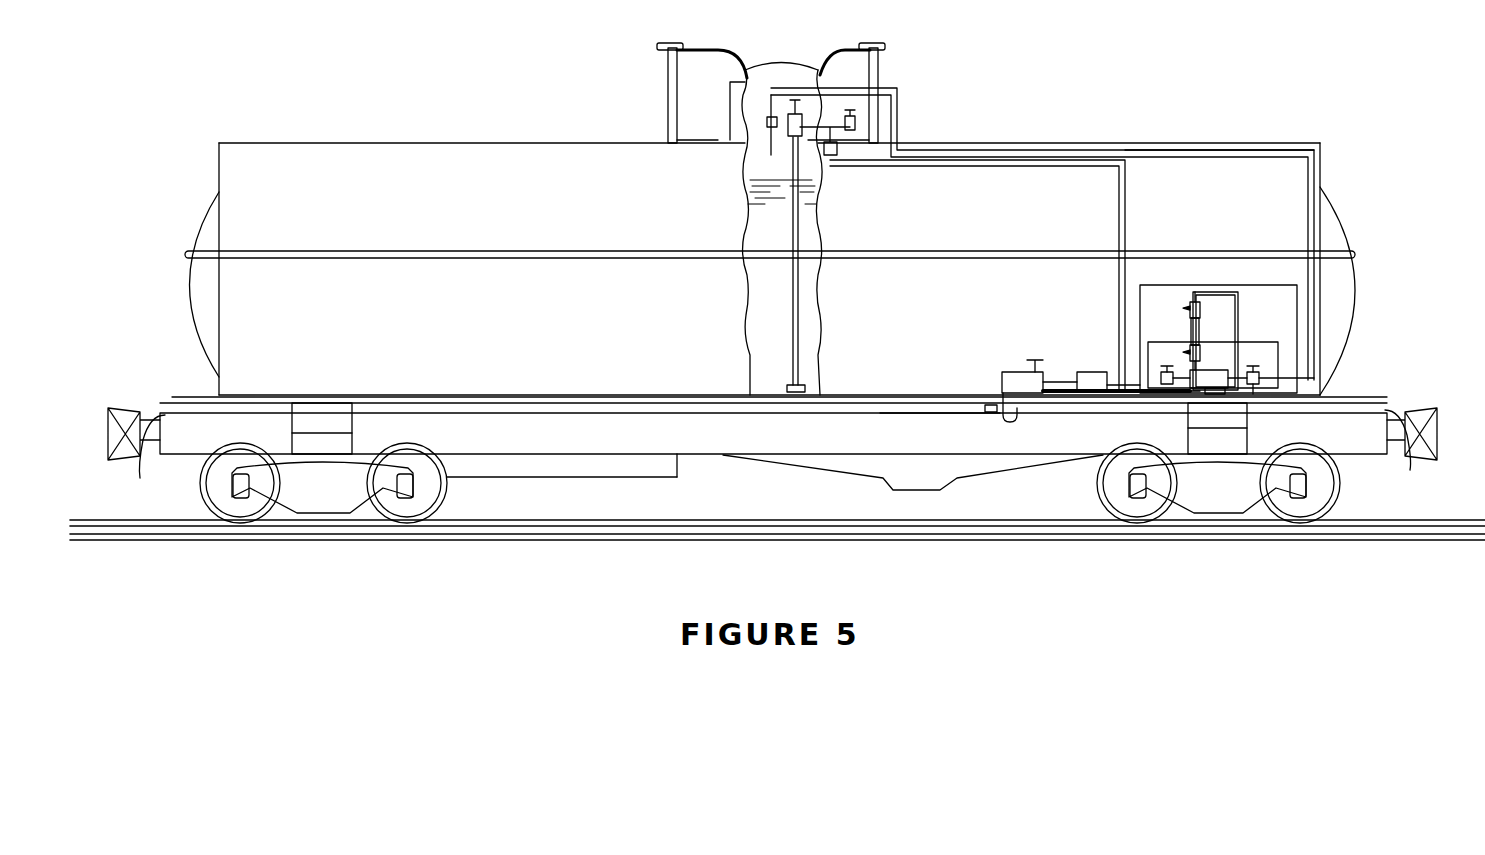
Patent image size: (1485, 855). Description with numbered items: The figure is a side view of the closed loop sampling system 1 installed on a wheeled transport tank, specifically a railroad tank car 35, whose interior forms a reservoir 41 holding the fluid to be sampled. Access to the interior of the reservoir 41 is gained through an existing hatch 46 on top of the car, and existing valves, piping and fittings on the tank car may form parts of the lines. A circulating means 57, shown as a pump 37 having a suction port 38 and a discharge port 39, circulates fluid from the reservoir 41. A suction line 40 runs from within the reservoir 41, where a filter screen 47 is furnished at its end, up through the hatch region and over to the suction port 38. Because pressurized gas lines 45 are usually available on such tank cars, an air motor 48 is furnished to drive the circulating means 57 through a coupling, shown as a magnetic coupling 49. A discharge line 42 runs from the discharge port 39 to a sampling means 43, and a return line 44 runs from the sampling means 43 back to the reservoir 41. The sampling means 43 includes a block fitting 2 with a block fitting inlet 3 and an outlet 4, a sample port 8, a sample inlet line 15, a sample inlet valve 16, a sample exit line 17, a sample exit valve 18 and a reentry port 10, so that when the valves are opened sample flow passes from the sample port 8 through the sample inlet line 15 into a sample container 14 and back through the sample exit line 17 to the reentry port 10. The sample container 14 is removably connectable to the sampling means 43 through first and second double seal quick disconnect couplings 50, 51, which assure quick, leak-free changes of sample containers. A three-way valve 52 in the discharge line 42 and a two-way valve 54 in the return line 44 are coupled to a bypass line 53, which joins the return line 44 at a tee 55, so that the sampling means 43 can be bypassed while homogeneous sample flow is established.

The system 1 is at (1265, 222).
The block fitting 2 is at (1215, 394).
The block fitting inlet 3 is at (1188, 392).
The outlet 4 is at (1252, 371).
The sample port 8 is at (1165, 371).
The reentry port 10 is at (1195, 415).
The sample container 14 is at (1190, 332).
The sample inlet line 15 is at (1198, 372).
The sample inlet valve 16 is at (1200, 345).
The sample exit line 17 is at (1240, 303).
The sample exit valve 18 is at (1201, 306).
The railroad tank car 35 is at (1127, 142).
The pump 37 is at (1096, 372).
The suction port 38 is at (1115, 385).
The discharge port 39 is at (1090, 394).
The suction line 40 is at (800, 236).
The reservoir 41 is at (782, 223).
The discharge line 42 is at (1105, 456).
The sampling means 43 is at (1284, 306).
The return line 44 is at (762, 147).
The pressurized gas line 45 is at (930, 412).
The hatch 46 is at (748, 72).
The filter screen 47 is at (793, 384).
The air motor 48 is at (1012, 372).
The magnetic coupling 49 is at (1053, 372).
The first double seal quick disconnect coupling 50 is at (1190, 350).
The second double seal quick disconnect coupling 51 is at (1193, 300).
The three-way valve 52 is at (1172, 390).
The bypass line 53 is at (1253, 344).
The two-way valve 54 is at (1253, 394).
The tee 55 is at (1282, 378).
The circulating means 57 is at (1108, 364).